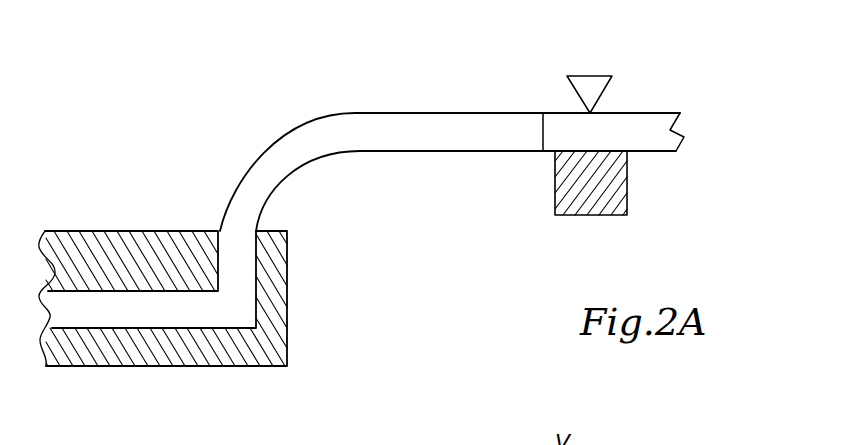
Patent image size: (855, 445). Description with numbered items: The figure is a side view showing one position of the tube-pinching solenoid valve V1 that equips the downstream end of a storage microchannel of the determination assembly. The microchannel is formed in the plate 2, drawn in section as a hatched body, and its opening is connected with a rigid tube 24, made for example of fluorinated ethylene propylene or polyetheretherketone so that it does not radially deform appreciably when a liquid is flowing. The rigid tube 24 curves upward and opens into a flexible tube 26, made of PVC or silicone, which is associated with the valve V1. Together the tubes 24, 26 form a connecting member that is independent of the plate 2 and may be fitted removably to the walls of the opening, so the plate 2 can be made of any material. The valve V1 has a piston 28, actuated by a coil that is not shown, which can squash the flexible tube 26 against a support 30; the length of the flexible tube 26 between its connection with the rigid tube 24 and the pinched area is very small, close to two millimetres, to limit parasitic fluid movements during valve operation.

The plate 2 is at (118, 231).
The rigid tube 24 is at (392, 113).
The flexible tube 26 is at (649, 114).
The piston 28 is at (590, 88).
The support 30 is at (627, 172).
The valve V1 is at (638, 220).